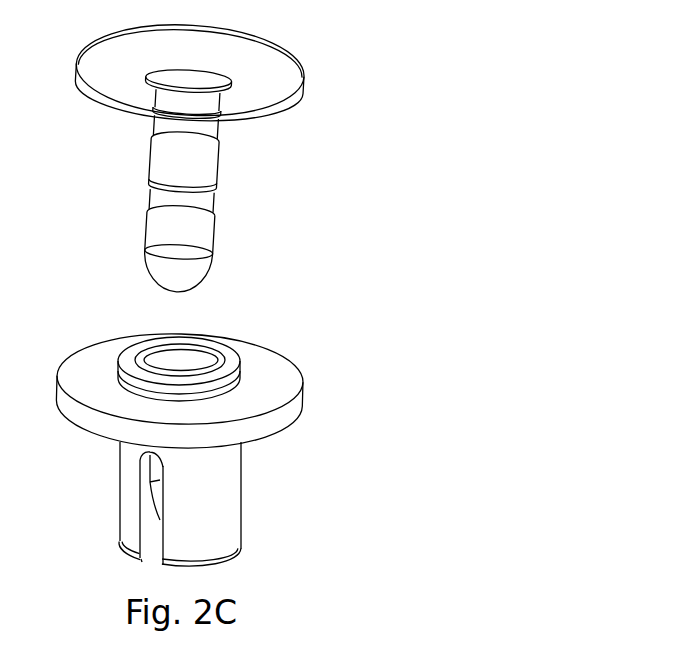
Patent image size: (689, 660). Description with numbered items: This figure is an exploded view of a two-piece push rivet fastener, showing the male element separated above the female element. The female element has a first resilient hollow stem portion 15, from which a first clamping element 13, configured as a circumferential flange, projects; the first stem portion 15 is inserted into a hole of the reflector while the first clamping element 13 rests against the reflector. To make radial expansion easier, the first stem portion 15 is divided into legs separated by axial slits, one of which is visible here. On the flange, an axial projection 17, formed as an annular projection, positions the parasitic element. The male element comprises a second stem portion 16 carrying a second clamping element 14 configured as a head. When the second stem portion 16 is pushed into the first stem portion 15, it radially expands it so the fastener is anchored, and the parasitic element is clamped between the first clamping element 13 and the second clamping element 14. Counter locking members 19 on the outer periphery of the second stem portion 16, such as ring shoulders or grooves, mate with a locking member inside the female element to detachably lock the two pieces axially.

The first clamping element 13 is at (288, 382).
The second clamping element 14 is at (268, 93).
The first resilient hollow stem portion 15 is at (228, 525).
The second stem portion 16 is at (197, 235).
The axial projection 17 is at (236, 360).
The counter locking member 19 is at (218, 128).